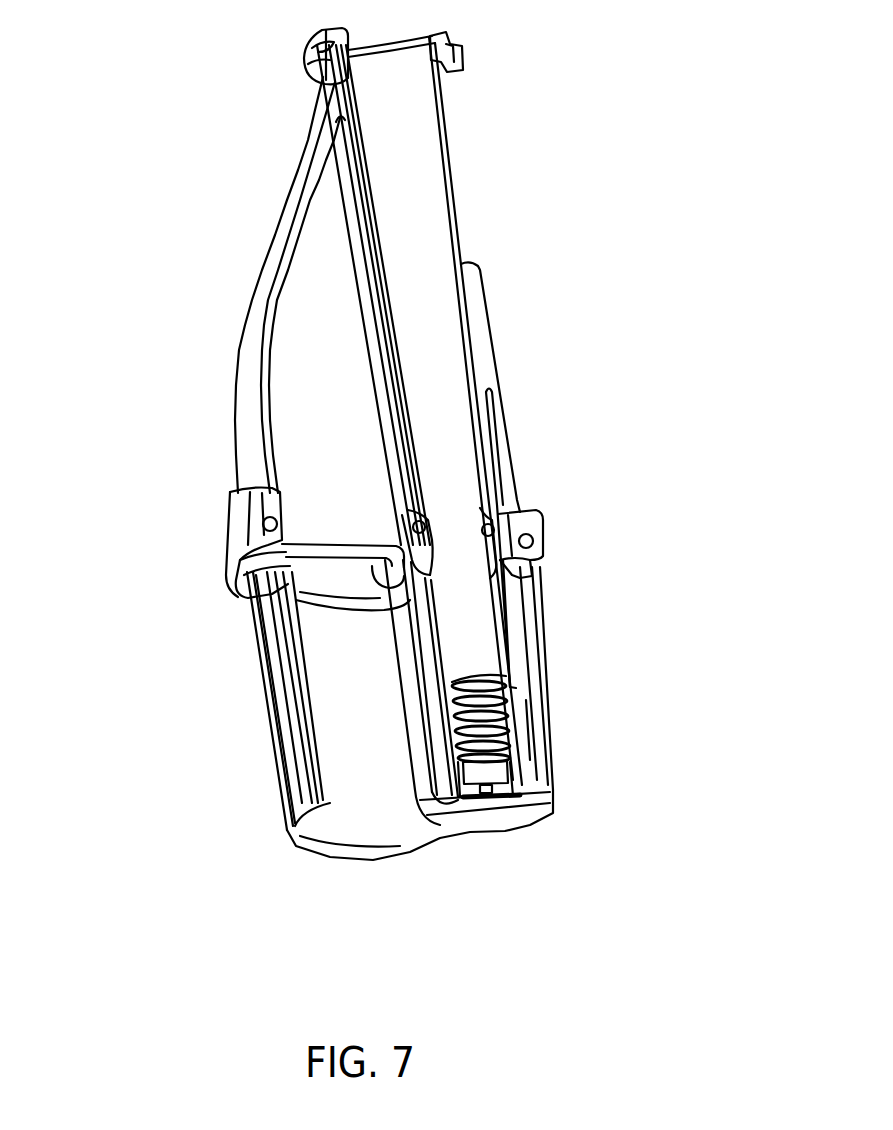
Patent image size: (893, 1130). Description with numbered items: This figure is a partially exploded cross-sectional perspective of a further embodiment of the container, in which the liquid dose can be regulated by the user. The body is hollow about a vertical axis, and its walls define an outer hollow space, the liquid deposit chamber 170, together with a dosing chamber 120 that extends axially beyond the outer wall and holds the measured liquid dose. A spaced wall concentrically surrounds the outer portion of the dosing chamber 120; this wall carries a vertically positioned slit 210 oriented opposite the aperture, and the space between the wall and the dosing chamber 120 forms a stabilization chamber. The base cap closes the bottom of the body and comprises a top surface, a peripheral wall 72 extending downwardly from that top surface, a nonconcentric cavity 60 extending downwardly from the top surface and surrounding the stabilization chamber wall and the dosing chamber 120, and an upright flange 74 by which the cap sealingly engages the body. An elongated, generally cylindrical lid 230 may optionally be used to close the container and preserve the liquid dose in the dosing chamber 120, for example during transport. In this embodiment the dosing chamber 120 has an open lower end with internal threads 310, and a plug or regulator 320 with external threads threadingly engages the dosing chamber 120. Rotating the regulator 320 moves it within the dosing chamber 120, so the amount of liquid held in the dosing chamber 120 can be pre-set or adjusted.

The lid 230 is at (440, 127).
The liquid deposit chamber 170 is at (303, 393).
The upright flange 74 is at (233, 522).
The slit 210 is at (417, 610).
The peripheral wall 72 is at (263, 692).
The dosing chamber 120 is at (473, 633).
The internal threads 310 is at (507, 728).
The nonconcentric cavity 60 is at (523, 760).
The regulator 320 is at (527, 790).